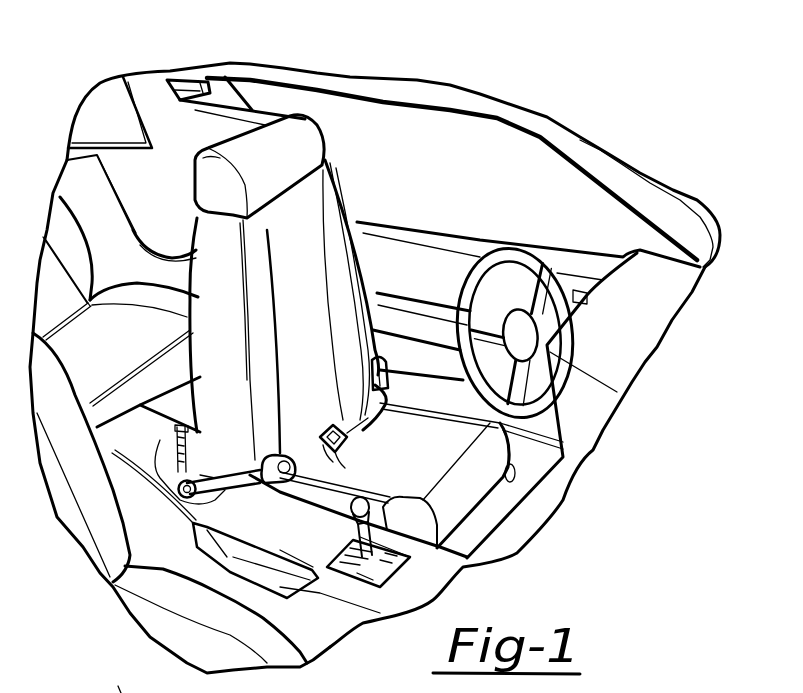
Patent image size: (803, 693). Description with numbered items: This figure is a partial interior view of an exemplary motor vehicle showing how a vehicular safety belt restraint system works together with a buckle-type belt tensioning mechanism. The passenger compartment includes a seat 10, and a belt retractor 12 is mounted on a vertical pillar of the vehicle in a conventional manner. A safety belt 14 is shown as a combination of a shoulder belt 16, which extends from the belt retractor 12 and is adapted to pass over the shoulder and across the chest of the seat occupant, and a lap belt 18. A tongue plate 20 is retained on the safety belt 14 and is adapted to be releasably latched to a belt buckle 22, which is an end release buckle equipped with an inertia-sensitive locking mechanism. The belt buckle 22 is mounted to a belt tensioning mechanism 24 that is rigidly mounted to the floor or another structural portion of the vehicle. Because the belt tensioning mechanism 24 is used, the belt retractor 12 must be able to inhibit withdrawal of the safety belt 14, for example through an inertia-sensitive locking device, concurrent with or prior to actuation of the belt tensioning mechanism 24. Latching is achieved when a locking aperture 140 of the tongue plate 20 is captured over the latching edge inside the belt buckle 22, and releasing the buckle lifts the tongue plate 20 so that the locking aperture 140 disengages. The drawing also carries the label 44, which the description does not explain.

The seat 10 is at (208, 341).
The belt retractor 12 is at (183, 84).
The safety belt 14 is at (360, 215).
The shoulder belt 16 is at (239, 110).
The lap belt 18 is at (386, 398).
The tongue plate 20 is at (333, 448).
The belt buckle 22 is at (278, 452).
The belt tensioning mechanism 24 is at (187, 470).
The locking aperture 140 is at (327, 453).
The control cable 44 is at (120, 692).